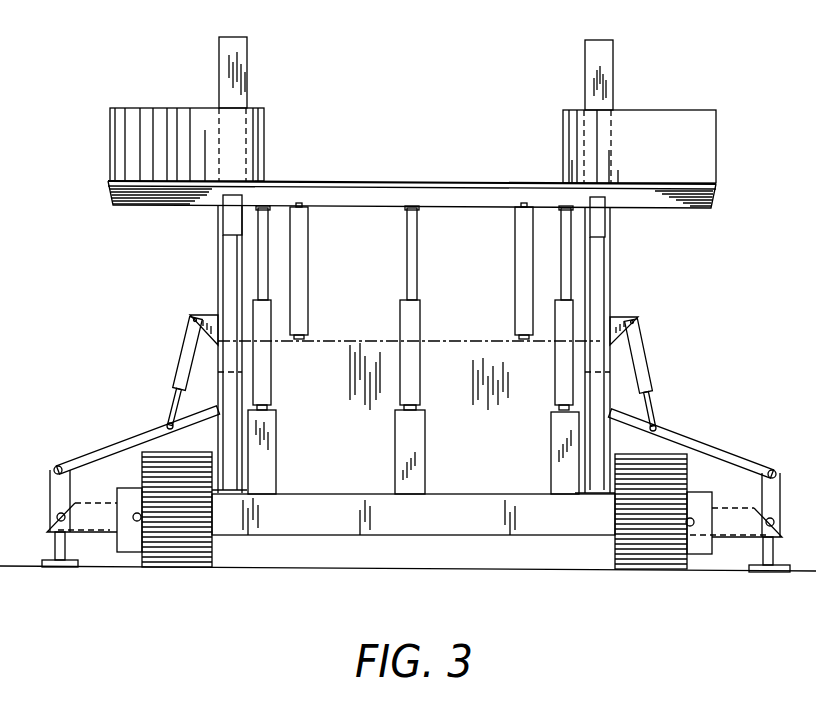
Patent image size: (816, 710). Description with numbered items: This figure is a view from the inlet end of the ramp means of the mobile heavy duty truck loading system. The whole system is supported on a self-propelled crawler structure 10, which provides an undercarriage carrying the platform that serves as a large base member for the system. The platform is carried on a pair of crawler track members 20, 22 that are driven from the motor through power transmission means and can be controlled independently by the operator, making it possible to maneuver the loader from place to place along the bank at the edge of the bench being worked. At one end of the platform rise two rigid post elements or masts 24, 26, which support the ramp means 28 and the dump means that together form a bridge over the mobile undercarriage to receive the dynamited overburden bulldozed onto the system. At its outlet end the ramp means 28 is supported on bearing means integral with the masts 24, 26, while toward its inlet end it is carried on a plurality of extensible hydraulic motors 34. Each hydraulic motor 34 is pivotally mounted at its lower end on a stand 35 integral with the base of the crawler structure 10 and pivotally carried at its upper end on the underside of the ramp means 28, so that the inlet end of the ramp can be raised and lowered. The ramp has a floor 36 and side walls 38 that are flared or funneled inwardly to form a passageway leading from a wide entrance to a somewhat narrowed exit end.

The self-propelled crawler structure 10 is at (305, 535).
The crawler track member 20 is at (168, 557).
The crawler track member 22 is at (644, 560).
The post element or mast 24 is at (225, 78).
The post element or mast 26 is at (600, 260).
The ramp means 28 is at (160, 181).
The extensible hydraulic motor 34 is at (267, 357).
The stand 35 is at (262, 452).
The floor 36 is at (188, 187).
The side wall 38 is at (108, 152).